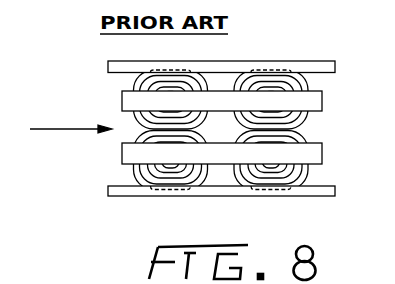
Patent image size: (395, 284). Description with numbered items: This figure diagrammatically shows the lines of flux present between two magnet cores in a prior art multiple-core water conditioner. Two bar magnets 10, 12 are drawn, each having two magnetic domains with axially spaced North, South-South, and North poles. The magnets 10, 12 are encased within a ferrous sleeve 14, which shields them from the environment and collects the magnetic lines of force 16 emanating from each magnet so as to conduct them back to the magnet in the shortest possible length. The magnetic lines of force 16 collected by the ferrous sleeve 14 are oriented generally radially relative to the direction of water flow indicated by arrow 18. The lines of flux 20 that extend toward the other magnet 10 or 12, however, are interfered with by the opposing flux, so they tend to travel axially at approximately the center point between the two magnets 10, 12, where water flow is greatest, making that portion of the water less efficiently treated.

The bar magnet 10 is at (323, 98).
The bar magnet 12 is at (322, 155).
The ferrous sleeve 14 is at (313, 67).
The magnetic lines of force 16 is at (133, 83).
The arrow 18 is at (59, 130).
The lines of flux 20 is at (126, 140).